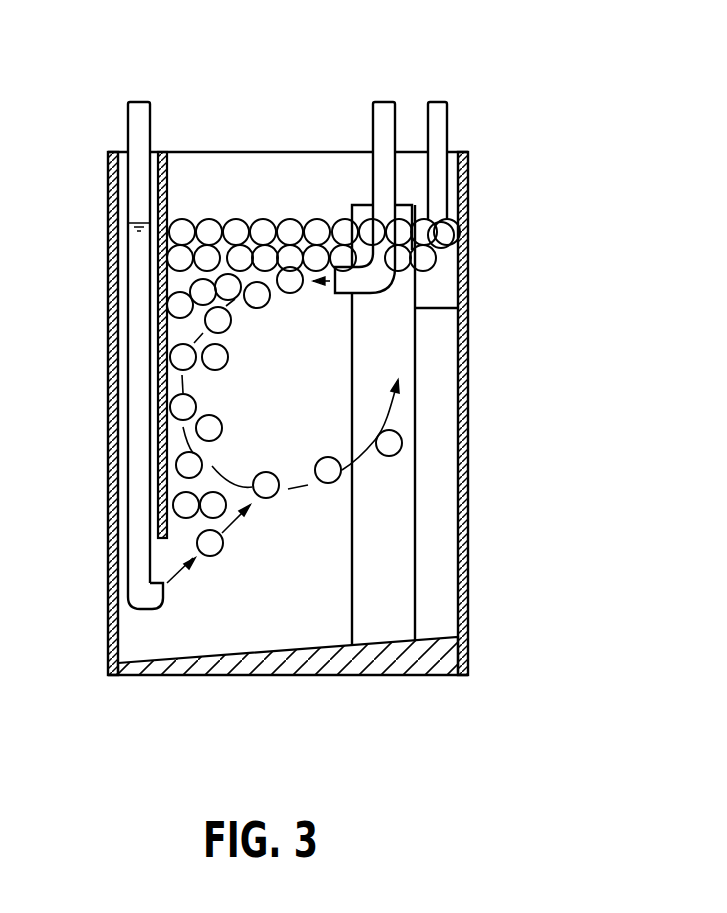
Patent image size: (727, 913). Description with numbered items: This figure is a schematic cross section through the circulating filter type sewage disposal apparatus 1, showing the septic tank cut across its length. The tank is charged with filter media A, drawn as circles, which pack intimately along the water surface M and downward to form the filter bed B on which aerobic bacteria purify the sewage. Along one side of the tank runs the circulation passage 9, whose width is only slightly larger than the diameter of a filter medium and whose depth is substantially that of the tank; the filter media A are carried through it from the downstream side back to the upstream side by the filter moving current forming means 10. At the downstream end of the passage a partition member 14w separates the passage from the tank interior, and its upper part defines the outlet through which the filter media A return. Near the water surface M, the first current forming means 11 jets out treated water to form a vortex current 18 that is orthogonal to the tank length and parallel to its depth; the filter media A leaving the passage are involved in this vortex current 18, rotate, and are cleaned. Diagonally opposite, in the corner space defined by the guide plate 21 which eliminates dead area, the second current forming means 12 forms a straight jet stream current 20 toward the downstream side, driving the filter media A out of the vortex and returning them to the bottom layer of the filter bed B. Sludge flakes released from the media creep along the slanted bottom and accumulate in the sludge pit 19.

The circulating filter type sewage disposal apparatus 1 is at (493, 167).
The circulation passage 9 is at (440, 278).
The filter moving current forming means 10 is at (437, 113).
The first current forming means 11 is at (393, 113).
The second current forming means 12 is at (142, 113).
The partition member 14w is at (450, 405).
The vortex current 18 is at (299, 490).
The sludge pit 19 is at (150, 665).
The straight jet stream current 20 is at (238, 525).
The guide plate 21 is at (165, 485).
The filter media A is at (322, 227).
The filter bed B is at (180, 322).
The water surface M is at (135, 222).